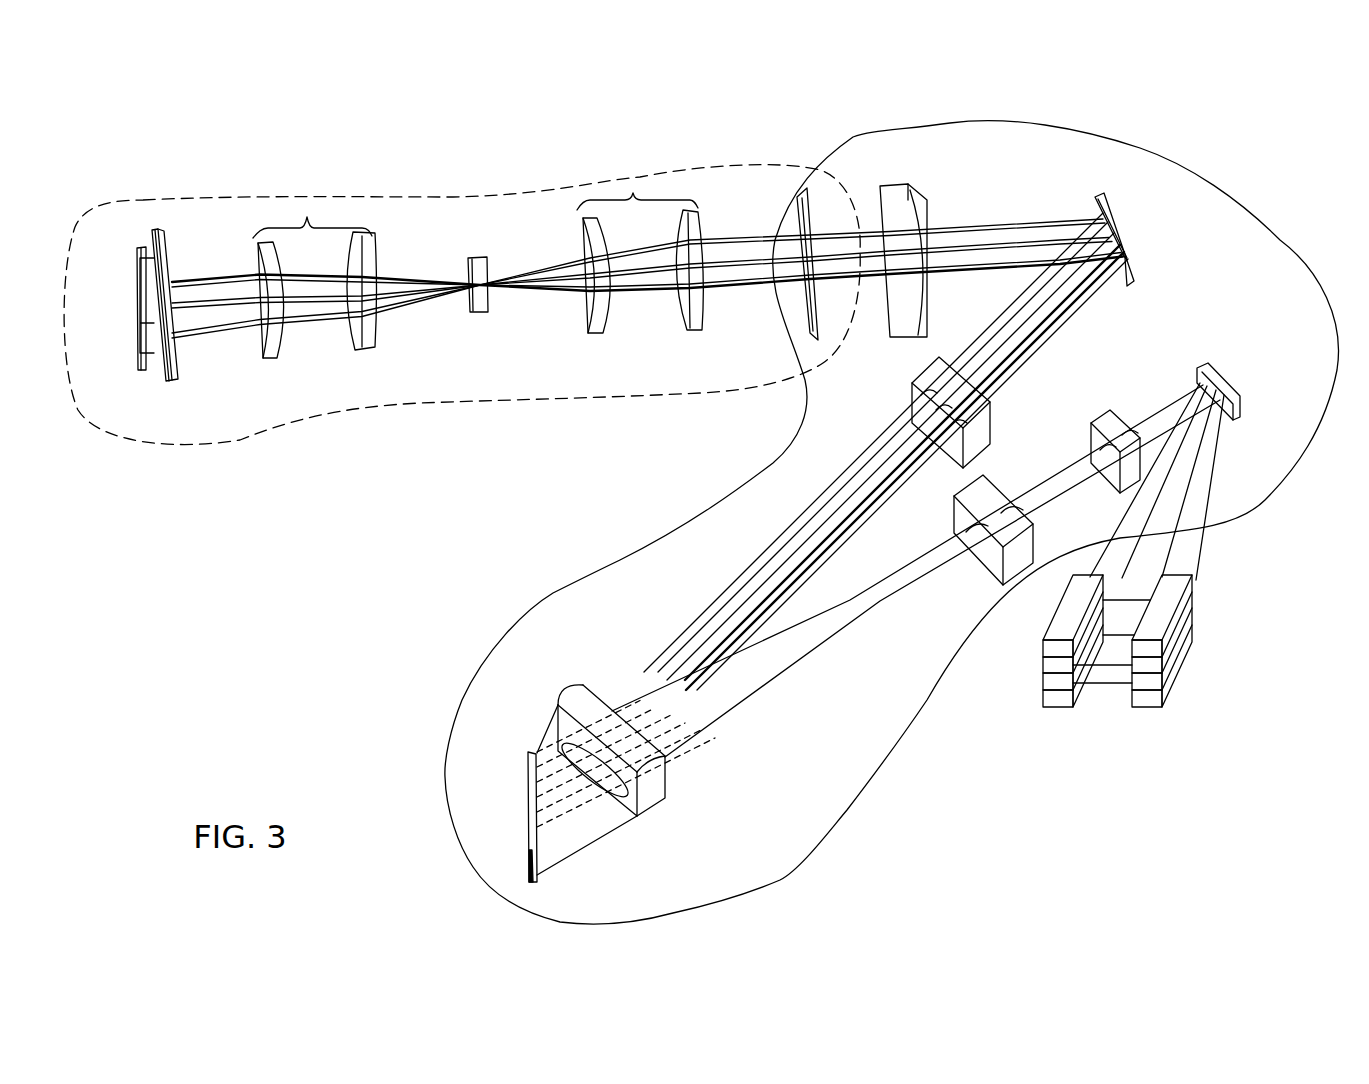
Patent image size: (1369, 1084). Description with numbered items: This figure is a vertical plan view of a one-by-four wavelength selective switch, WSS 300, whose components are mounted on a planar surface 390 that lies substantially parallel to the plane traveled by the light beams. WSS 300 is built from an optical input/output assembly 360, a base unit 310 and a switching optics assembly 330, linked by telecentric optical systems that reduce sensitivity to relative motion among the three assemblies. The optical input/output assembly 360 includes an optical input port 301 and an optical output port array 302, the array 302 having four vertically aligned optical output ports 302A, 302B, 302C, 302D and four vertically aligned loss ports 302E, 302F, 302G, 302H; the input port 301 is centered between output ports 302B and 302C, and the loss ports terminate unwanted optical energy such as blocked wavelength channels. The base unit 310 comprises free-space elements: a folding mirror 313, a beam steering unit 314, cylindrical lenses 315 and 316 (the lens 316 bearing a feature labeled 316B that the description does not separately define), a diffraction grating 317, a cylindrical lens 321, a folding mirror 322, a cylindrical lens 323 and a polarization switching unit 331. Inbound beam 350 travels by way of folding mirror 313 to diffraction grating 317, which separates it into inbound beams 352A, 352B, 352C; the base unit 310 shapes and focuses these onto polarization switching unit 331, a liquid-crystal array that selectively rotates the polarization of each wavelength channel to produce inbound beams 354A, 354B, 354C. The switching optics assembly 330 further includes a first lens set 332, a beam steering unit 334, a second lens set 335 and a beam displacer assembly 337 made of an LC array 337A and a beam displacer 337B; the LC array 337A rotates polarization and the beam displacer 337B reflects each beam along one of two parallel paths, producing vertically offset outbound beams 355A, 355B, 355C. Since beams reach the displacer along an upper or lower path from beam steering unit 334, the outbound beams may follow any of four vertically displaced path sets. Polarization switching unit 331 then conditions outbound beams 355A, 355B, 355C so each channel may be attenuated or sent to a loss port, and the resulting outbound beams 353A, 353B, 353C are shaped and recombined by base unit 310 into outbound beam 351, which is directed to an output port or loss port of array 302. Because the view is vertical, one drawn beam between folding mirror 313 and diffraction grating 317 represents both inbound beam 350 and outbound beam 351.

The WSS 300 is at (231, 156).
The optical input port 301 is at (1052, 618).
The optical output port array 302 is at (1118, 570).
The optical output port 302A is at (1056, 648).
The optical output port 302B is at (1050, 664).
The optical output port 302C is at (1048, 681).
The optical output port 302D is at (1046, 700).
The loss port 302E is at (1196, 578).
The loss port 302F is at (1196, 600).
The loss port 302G is at (1188, 628).
The loss port 302H is at (1176, 680).
The base unit 310 is at (1195, 183).
The folding mirror 313 is at (1212, 365).
The beam steering unit 314 is at (1093, 420).
The cylindrical lens 315 is at (1000, 487).
The cylindrical lens 316 is at (667, 782).
The curved surface of prism 316B is at (656, 742).
The diffraction grating 317 is at (540, 880).
The cylindrical lens 321 is at (917, 368).
The folding mirror 322 is at (1105, 200).
The cylindrical lens 323 is at (887, 185).
The switching optics assembly 330 is at (342, 413).
The polarization switching unit 331 is at (808, 196).
The first lens set 332 is at (633, 192).
The beam steering unit 334 is at (470, 256).
The second lens set 335 is at (307, 215).
The beam displacer assembly 337 is at (163, 289).
The LC array 337A is at (174, 386).
The beam displacer 337B is at (163, 382).
The inbound beam 350 is at (838, 622).
The outbound beam 351 is at (892, 583).
The inbound beam 352A is at (973, 280).
The inbound beam 352B is at (973, 257).
The inbound beam 352C is at (937, 217).
The outbound beam 353A is at (1028, 277).
The outbound beam 353B is at (997, 252).
The outbound beam 353C is at (992, 213).
The inbound beam 354A is at (207, 273).
The inbound beam 354B is at (203, 298).
The inbound beam 354C is at (183, 330).
The outbound beam 355A is at (254, 273).
The outbound beam 355B is at (220, 297).
The outbound beam 355C is at (223, 330).
The optical input/output assembly 360 is at (1179, 737).
The planar surface 390 is at (480, 505).